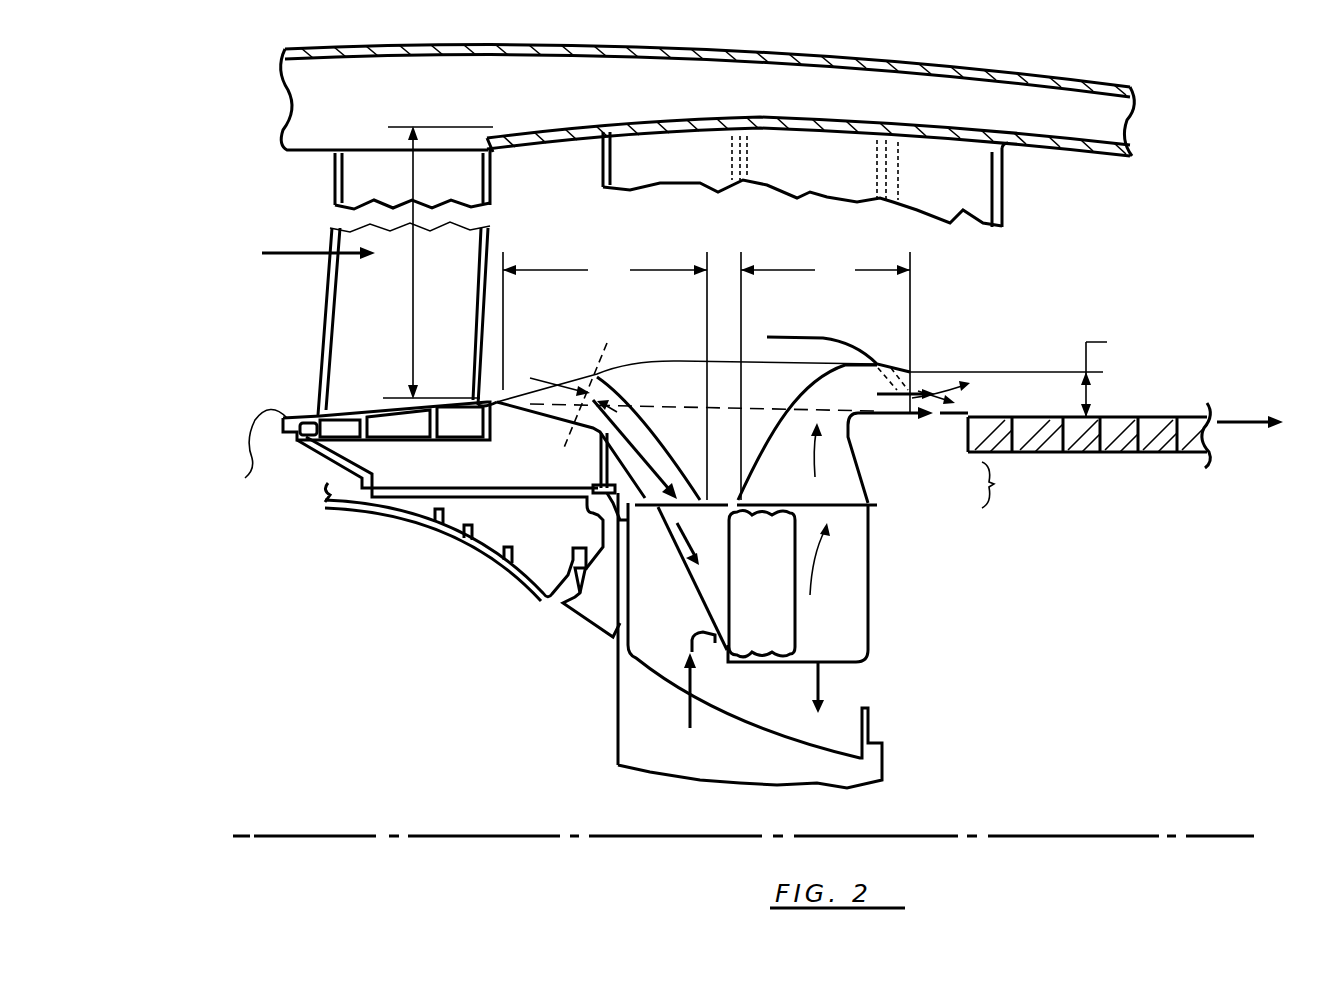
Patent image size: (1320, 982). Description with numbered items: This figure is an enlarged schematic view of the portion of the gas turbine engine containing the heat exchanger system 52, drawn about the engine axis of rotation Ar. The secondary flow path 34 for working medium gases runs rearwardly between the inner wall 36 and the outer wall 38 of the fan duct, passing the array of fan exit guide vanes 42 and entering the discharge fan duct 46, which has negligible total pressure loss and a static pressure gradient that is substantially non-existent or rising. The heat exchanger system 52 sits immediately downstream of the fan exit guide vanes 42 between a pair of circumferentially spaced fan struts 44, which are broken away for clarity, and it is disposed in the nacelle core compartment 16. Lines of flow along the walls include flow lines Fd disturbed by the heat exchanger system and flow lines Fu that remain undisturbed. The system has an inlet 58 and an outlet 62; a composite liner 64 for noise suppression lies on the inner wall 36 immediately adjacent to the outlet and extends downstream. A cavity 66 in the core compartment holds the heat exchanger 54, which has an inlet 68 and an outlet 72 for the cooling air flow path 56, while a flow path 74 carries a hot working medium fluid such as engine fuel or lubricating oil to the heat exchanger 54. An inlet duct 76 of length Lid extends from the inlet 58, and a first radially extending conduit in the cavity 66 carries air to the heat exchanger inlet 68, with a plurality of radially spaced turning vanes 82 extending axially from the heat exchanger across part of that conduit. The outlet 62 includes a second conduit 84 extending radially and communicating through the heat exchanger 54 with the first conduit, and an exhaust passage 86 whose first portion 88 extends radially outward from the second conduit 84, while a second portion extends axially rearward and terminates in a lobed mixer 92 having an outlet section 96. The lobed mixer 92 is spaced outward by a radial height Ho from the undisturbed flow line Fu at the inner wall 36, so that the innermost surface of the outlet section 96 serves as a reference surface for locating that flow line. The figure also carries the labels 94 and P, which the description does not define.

The core compartment 16 is at (914, 698).
The secondary flow path 34 is at (833, 338).
The inner wall 36 is at (277, 408).
The outer wall 38 is at (543, 150).
The fan exit guide vanes 42 is at (385, 351).
The fan struts 44 is at (805, 162).
The discharge fan duct 46 is at (792, 225).
The heat exchanger system 52 is at (812, 616).
The heat exchanger 54 is at (775, 555).
The cooling air flow path 56 is at (552, 341).
The inlet 58 is at (605, 376).
The outlet 62 is at (825, 376).
The composite liner 64 is at (1120, 417).
The cavity 66 is at (870, 632).
The heat exchanger inlet 68 is at (727, 588).
The heat exchanger outlet 72 is at (793, 607).
The working medium fluid flow path 74 is at (688, 712).
The inlet duct 76 is at (628, 472).
The turning vanes 82 is at (720, 577).
The second conduit 84 is at (857, 570).
The exhaust passage 86 is at (1007, 485).
The first portion 88 is at (850, 485).
The lobed mixer 92 is at (890, 416).
The dashed outlet line 94 is at (892, 366).
The outlet section 96 is at (910, 368).
The radial height Ho is at (1028, 372).
The inlet duct length Lid is at (643, 450).
The undisturbed flow lines Fu is at (723, 407).
The disturbed flow lines Fd is at (767, 337).
The plane P is at (597, 375).
The axis of rotation Ar is at (319, 836).